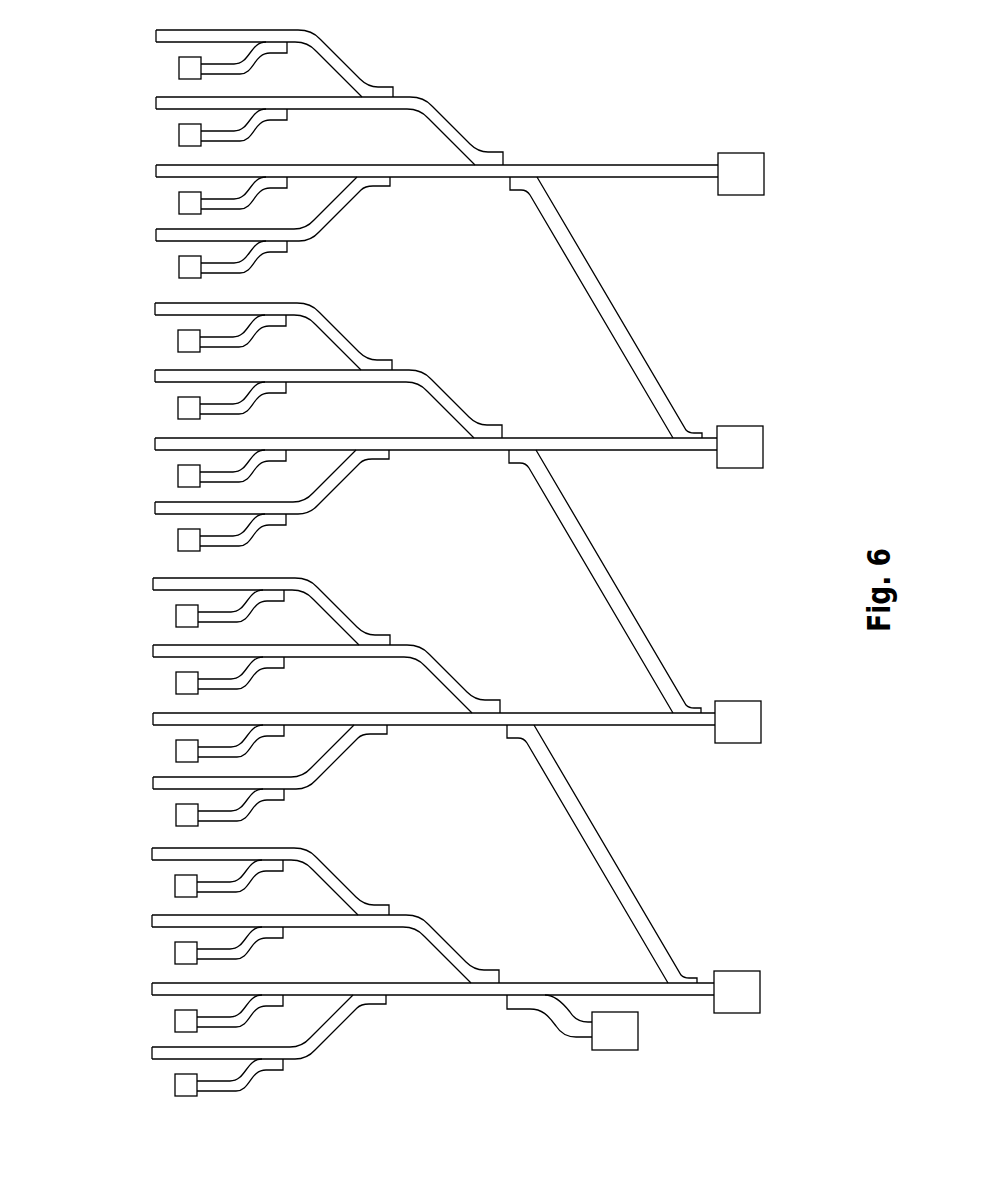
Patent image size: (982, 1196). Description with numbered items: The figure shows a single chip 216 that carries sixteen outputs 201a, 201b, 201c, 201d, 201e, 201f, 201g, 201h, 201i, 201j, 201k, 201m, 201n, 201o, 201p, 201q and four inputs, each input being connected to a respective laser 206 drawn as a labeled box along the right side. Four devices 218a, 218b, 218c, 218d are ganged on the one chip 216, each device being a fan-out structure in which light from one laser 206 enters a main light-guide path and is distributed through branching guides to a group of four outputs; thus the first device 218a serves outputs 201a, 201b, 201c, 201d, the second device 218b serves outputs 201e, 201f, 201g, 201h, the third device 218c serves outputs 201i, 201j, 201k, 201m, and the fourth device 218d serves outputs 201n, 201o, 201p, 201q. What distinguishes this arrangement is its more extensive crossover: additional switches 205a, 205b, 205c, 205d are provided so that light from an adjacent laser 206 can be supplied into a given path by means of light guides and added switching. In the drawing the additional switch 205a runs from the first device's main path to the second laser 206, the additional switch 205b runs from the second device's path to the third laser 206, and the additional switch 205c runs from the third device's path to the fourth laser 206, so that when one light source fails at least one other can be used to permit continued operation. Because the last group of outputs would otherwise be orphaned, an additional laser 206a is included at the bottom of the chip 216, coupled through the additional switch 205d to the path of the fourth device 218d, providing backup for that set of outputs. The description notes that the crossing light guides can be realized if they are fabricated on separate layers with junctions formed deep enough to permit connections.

The output 201a is at (156, 34).
The output 201b is at (156, 101).
The output 201c is at (156, 169).
The output 201d is at (156, 233).
The output 201e is at (215, 331).
The output 201f is at (273, 398).
The output 201g is at (377, 457).
The output 201h is at (213, 500).
The output 201i is at (216, 606).
The output 201j is at (271, 673).
The output 201k is at (376, 732).
The output 201m is at (207, 775).
The output 201n is at (212, 876).
The output 201o is at (267, 943).
The output 201p is at (374, 1002).
The output 201q is at (210, 1045).
The additional switch 205a is at (695, 416).
The additional switch 205b is at (689, 690).
The additional switch 205c is at (688, 950).
The additional switch 205d is at (537, 1041).
The laser 206 is at (723, 188).
The additional laser 206a is at (638, 1029).
The chip 216 is at (571, 60).
The device 218a is at (387, 212).
The device 218b is at (377, 429).
The device 218c is at (371, 696).
The device 218d is at (374, 966).